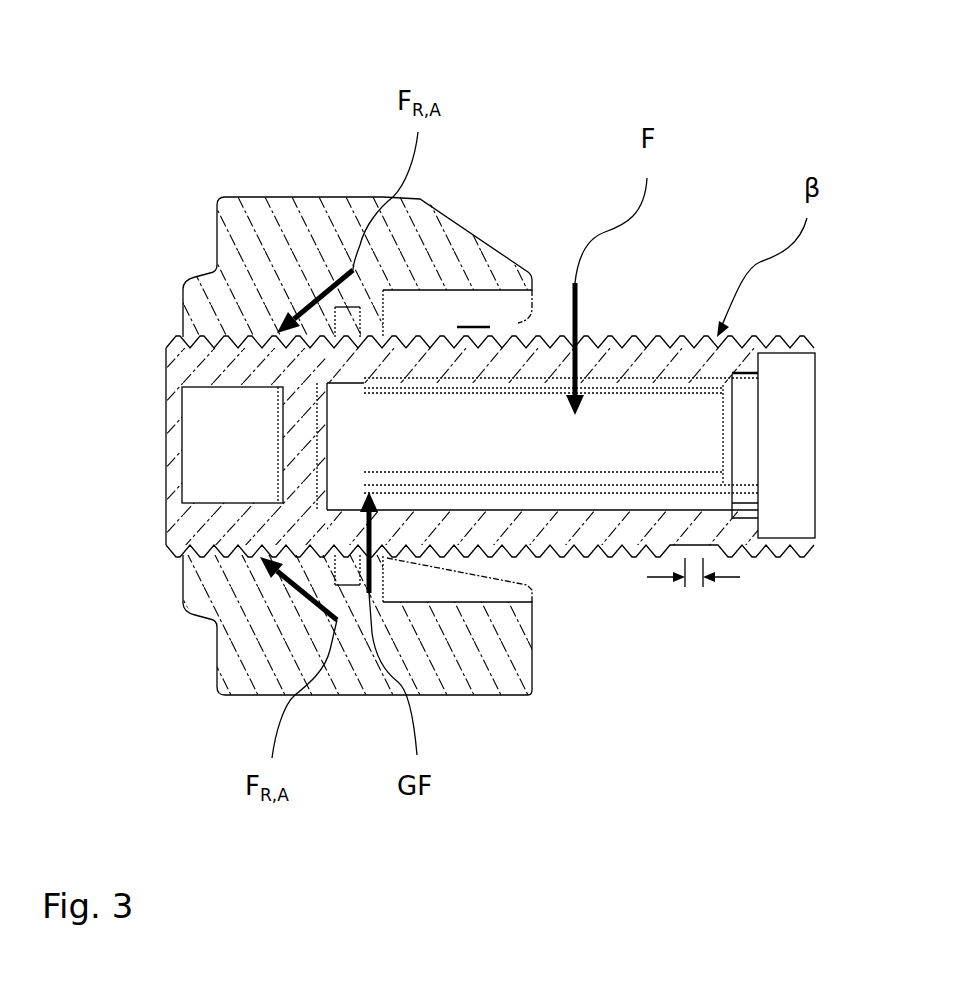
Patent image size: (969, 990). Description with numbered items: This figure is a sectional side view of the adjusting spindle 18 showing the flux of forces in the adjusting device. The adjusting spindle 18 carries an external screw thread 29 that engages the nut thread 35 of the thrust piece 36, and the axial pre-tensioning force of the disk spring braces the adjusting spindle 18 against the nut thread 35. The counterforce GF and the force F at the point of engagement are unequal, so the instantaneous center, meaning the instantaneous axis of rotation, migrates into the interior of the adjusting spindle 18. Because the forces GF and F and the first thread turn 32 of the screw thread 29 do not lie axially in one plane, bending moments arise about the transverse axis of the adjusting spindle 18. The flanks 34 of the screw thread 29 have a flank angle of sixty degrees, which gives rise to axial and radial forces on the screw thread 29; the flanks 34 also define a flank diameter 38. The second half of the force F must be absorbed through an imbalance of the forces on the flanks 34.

The adjusting spindle 18 is at (715, 627).
The screw thread 29 is at (577, 570).
The first thread turn 32 is at (193, 343).
The flanks 34 is at (637, 338).
The nut thread 35 is at (245, 312).
The thrust piece 36 is at (308, 195).
The flank diameter 38 is at (740, 577).